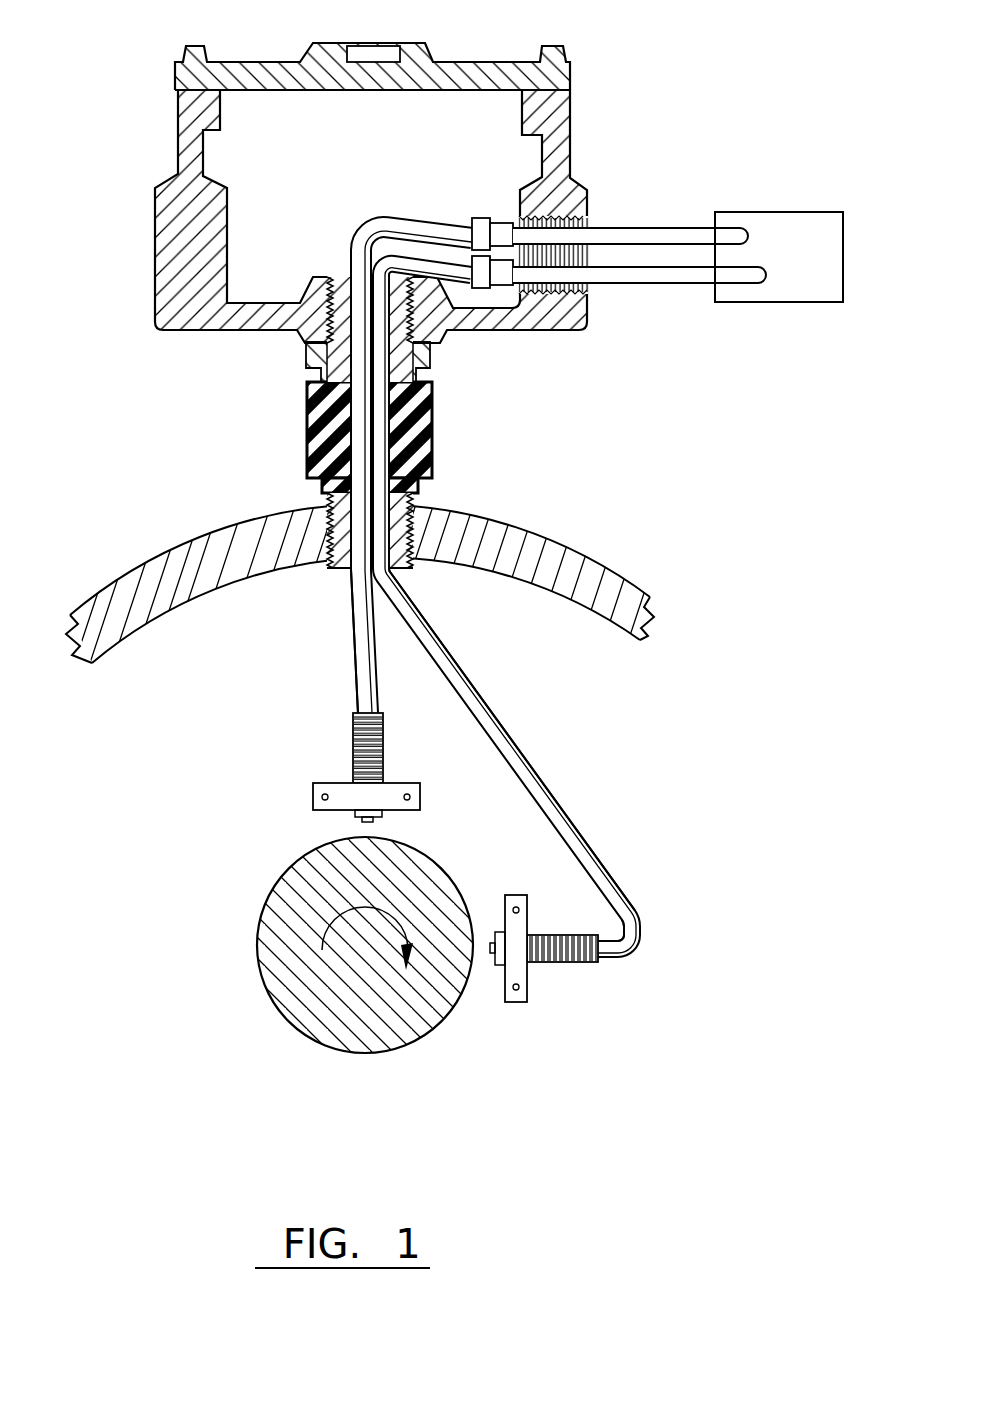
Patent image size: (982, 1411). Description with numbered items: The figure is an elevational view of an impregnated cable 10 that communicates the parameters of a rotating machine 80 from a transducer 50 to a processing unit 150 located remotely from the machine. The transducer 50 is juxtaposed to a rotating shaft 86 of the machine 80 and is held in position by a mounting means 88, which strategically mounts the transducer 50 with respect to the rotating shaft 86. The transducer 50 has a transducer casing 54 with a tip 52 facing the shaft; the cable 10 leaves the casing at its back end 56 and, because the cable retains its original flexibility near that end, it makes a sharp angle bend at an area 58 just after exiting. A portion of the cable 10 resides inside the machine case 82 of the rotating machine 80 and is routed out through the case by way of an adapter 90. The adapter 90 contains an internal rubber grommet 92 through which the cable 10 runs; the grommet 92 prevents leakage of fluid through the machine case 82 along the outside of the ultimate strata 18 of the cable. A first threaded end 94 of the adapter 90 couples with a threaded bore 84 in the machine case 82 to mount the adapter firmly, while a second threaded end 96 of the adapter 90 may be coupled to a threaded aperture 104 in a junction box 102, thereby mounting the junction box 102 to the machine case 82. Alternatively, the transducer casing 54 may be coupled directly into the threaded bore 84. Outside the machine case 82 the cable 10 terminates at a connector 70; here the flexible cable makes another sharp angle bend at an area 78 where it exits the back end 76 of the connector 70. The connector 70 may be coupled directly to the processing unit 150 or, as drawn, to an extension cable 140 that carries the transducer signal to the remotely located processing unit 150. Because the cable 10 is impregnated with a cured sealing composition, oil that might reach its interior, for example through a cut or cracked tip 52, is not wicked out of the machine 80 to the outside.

The junction box 102 is at (608, 92).
The threaded aperture 104 is at (340, 268).
The sharp angle bend area 78 is at (412, 248).
The back end of connector 76 is at (458, 258).
The connector 70 is at (482, 265).
The extension cable 140 is at (685, 270).
The processing unit 150 is at (803, 213).
The second threaded end of adapter 96 is at (333, 350).
The internal rubber grommet 92 is at (420, 430).
The adapter 90 is at (433, 463).
The rotating machine 80 is at (632, 566).
The machine case 82 is at (645, 600).
The first threaded end of adapter 94 is at (337, 571).
The threaded bore 84 is at (413, 560).
The cable 10 is at (328, 632).
The ultimate strata 18 is at (433, 657).
The transducer 50 is at (428, 888).
The back end of transducer casing 56 is at (377, 713).
The transducer casing 54 is at (355, 763).
The mounting means 88 is at (317, 797).
The tip of transducer 52 is at (365, 822).
The sharp angle bend area 58 is at (660, 920).
The rotating shaft 86 is at (283, 1020).